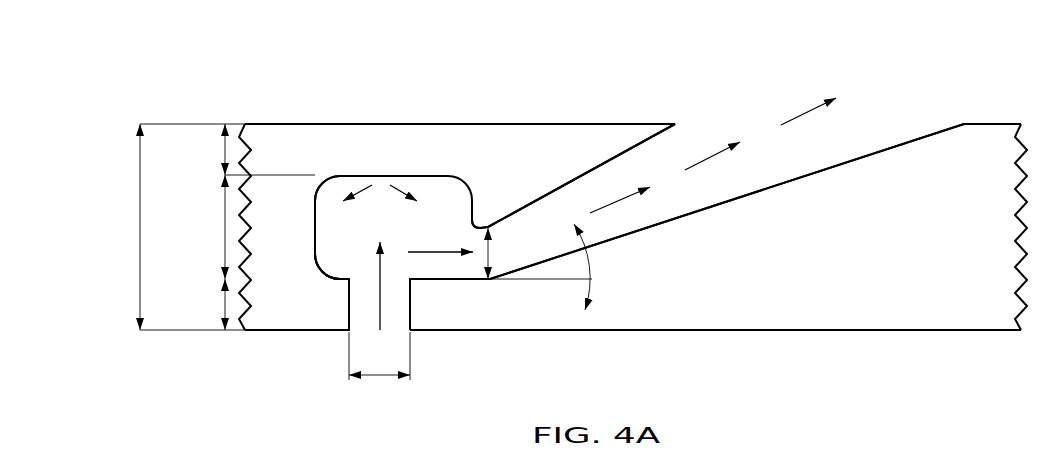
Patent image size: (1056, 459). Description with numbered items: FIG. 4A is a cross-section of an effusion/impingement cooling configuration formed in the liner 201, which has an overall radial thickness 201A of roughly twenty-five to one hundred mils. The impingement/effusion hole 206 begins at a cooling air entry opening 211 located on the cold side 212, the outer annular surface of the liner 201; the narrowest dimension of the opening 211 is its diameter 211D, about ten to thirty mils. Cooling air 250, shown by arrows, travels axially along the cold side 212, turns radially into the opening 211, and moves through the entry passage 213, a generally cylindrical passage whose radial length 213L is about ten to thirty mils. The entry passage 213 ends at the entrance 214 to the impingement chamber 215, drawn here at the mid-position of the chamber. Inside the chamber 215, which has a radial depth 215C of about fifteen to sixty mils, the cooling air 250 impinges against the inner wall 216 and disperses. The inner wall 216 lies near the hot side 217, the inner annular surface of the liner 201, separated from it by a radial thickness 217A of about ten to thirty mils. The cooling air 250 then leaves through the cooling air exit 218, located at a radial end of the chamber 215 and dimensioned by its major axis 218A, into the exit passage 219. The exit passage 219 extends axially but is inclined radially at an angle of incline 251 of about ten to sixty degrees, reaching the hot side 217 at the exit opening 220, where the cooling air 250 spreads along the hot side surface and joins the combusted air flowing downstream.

The liner 201 is at (196, 78).
The overall radial thickness 201A is at (140, 228).
The impingement/effusion hole 206 is at (340, 349).
The cooling air entry opening 211 is at (399, 330).
The diameter of opening 211D is at (380, 377).
The cold side 212 is at (640, 332).
The entry passage 213 is at (413, 318).
The length 213L is at (226, 302).
The entrance 214 is at (347, 272).
The impingement chamber 215 is at (362, 227).
The radial depth 215C is at (224, 228).
The inner wall 216 is at (418, 176).
The hot side 217 is at (312, 124).
The radial thickness 217A is at (226, 152).
The cooling air exit 218 is at (479, 229).
The major axis 218A is at (489, 252).
The exit passage 219 is at (671, 142).
The exit opening 220 is at (921, 128).
The cooling air 250 is at (428, 251).
The angle of incline 251 is at (588, 258).